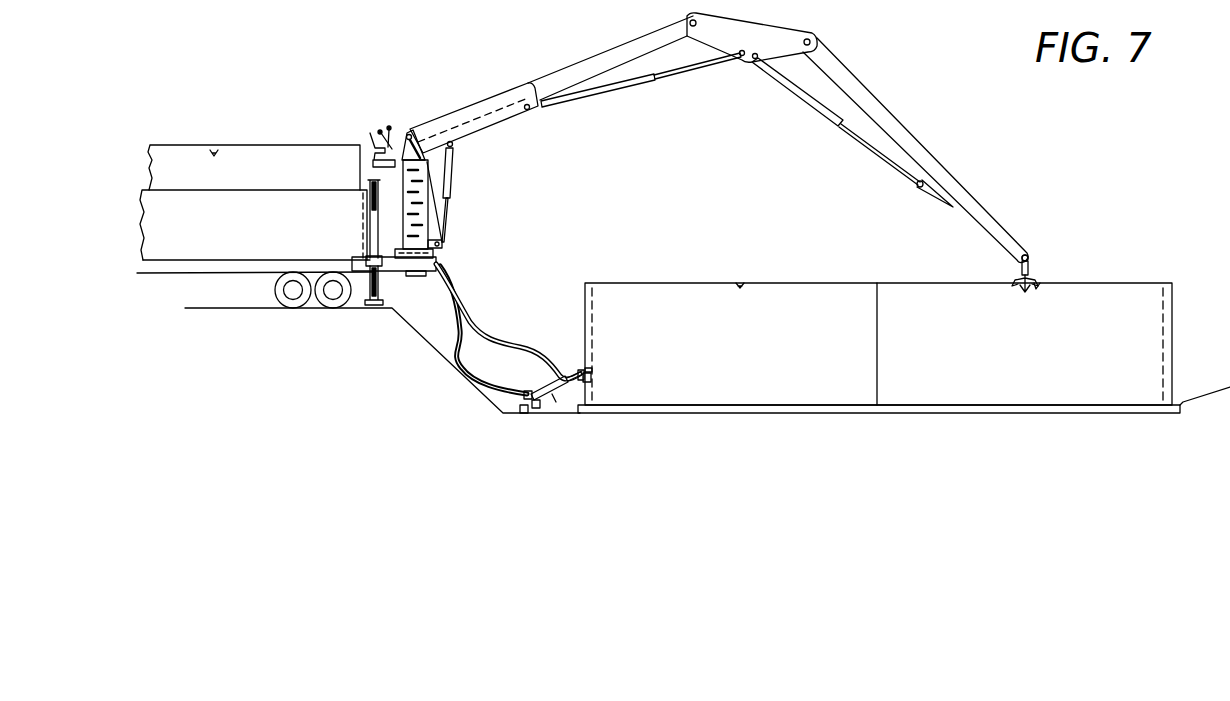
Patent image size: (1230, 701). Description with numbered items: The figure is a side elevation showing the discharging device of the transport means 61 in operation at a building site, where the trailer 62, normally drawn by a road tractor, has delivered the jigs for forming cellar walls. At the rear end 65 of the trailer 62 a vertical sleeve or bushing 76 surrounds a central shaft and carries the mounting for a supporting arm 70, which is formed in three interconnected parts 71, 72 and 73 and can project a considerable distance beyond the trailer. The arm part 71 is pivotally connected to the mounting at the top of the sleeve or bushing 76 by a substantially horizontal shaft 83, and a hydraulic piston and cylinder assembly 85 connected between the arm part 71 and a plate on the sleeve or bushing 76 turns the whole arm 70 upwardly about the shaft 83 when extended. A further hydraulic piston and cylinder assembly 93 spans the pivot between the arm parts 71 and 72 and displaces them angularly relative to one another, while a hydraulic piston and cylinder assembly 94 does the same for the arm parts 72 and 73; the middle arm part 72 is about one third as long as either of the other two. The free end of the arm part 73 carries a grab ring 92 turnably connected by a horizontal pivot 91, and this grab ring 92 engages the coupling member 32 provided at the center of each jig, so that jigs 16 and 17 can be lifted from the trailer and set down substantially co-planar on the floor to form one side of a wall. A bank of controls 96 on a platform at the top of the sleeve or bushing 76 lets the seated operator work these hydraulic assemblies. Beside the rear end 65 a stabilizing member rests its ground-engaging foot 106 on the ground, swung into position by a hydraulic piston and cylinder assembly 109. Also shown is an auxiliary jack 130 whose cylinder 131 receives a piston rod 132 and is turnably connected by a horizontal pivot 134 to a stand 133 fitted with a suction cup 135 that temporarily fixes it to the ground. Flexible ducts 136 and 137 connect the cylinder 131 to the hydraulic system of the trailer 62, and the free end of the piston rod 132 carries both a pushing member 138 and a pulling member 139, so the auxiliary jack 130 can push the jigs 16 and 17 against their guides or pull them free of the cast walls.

The jig 16 is at (930, 298).
The jig 17 is at (648, 292).
The coupling member 32 is at (220, 148).
The transport means 61 is at (185, 278).
The trailer 62 is at (238, 280).
The rear end of the trailer 65 is at (406, 282).
The supporting arm 70 is at (614, 38).
The arm part 71 is at (536, 82).
The arm part 72 is at (748, 31).
The arm part 73 is at (925, 152).
The sleeve or bushing 76 is at (428, 216).
The horizontal shaft 83 is at (412, 128).
The hydraulic piston and cylinder assembly 85 is at (452, 193).
The horizontal pivot 91 is at (1030, 256).
The grab ring 92 is at (1012, 278).
The hydraulic piston and cylinder assembly 93 is at (614, 88).
The hydraulic piston and cylinder assembly 94 is at (808, 96).
The bank of controls 96 is at (372, 137).
The ground-engaging foot 106 is at (372, 307).
The hydraulic piston and cylinder assembly 109 is at (368, 213).
The auxiliary jack 130 is at (553, 395).
The cylinder 131 is at (562, 390).
The piston rod 132 is at (577, 368).
The stand 133 is at (536, 410).
The horizontal pivot 134 is at (524, 391).
The suction cup 135 is at (519, 413).
The flexible duct 136 is at (457, 351).
The flexible duct 137 is at (464, 306).
The pushing member 138 is at (592, 370).
The pulling member 139 is at (592, 380).